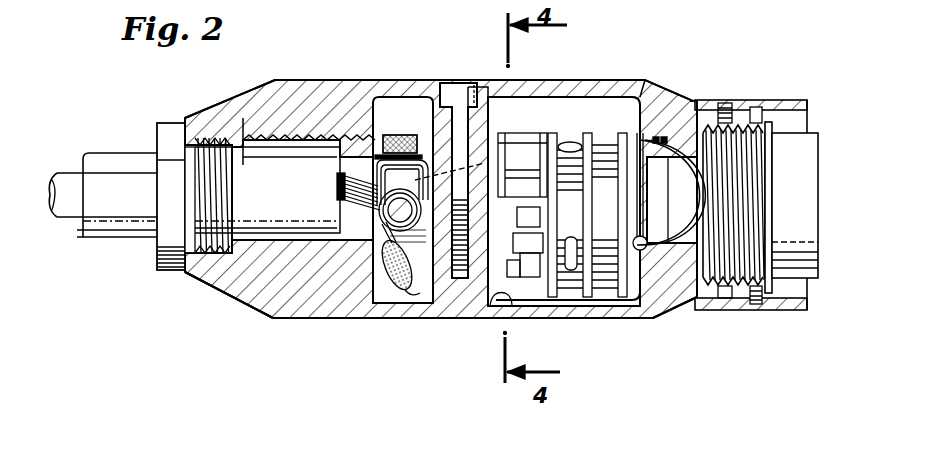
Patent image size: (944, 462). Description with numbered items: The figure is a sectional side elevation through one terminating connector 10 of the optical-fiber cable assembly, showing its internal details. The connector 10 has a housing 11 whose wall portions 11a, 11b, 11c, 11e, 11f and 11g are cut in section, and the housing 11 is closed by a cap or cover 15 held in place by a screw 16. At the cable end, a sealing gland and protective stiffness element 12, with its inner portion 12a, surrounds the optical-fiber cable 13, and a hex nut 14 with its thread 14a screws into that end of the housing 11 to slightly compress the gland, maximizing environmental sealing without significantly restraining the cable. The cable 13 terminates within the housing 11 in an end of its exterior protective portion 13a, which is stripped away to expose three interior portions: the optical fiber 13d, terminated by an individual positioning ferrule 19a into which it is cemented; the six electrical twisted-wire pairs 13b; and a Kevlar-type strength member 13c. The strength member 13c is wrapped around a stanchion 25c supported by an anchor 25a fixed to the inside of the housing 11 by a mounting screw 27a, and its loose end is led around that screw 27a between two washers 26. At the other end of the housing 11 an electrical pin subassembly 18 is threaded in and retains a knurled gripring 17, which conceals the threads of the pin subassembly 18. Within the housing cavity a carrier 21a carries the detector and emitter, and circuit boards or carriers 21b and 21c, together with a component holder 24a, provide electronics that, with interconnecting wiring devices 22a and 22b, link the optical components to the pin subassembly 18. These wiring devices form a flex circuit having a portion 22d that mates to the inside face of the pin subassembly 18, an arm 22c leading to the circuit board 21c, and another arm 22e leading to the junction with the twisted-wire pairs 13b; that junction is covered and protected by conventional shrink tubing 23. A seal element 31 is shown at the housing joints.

The connector 10 is at (253, 324).
The housing 11 is at (215, 278).
The threaded nose portion of housing 11a is at (193, 137).
The sloped lower wall of housing 11b is at (257, 248).
The bottom wall of housing 11c is at (393, 304).
The boss in housing cavity 11e is at (508, 298).
The screw bore 11f is at (462, 278).
The sloped end wall of housing 11g is at (655, 315).
The sealing gland and protective stiffness element 12 is at (112, 237).
The cable entry tube 12a is at (247, 118).
The optical-fiber cable 13 is at (62, 218).
The exterior protective portion 13a is at (337, 180).
The electrical twisted-wire pairs 13b is at (367, 228).
The strength member 13c is at (352, 150).
The optical fiber 13d is at (564, 201).
The hex nut 14 is at (168, 122).
The nut thread 14a is at (205, 180).
The cap or cover 15 is at (316, 90).
The screw 16 is at (458, 83).
The knurled gripring 17 is at (806, 102).
The electrical pin subassembly 18 is at (824, 166).
The positioning ferrule 19a is at (500, 97).
The carrier 21a is at (558, 138).
The circuit board or carrier 21b is at (587, 133).
The circuit board or carrier 21c is at (636, 138).
The interconnecting wiring device 22a is at (645, 140).
The interconnecting wiring device 22b is at (658, 138).
The arm 22c is at (700, 268).
The portion 22d is at (700, 208).
The arm 22e is at (418, 298).
The shrink tubing 23 is at (388, 278).
The component holder 24a is at (531, 143).
The anchor 25a is at (422, 155).
The stanchion 25c is at (335, 190).
The washers 26 is at (378, 98).
The mounting screw 27a is at (392, 133).
The chamfer 31 is at (272, 83).